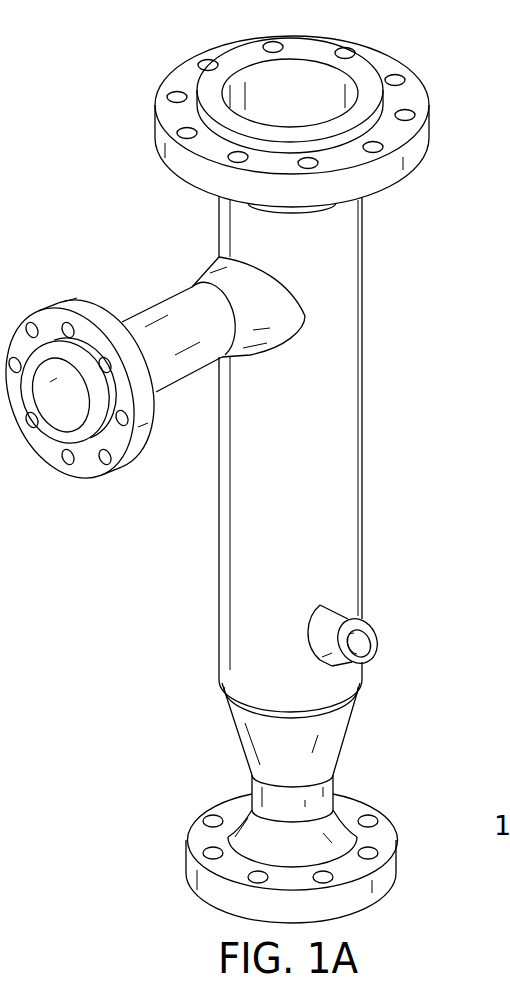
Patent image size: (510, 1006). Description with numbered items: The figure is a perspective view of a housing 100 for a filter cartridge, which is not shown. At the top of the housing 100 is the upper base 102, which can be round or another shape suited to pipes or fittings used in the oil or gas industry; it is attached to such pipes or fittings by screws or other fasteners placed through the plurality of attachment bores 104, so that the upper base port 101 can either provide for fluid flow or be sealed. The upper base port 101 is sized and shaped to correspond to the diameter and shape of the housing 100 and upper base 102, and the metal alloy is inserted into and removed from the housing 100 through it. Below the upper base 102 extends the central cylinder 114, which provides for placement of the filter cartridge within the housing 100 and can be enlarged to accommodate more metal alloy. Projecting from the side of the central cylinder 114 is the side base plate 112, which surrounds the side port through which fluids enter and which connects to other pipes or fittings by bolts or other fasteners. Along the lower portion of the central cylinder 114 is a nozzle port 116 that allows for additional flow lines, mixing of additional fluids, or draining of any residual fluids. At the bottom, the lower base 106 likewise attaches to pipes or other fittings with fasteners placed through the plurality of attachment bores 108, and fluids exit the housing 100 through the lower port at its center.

The housing 100 is at (420, 318).
The upper base port 101 is at (305, 82).
The upper base 102 is at (425, 134).
The attachment bores 104 is at (170, 90).
The lower base 106 is at (360, 808).
The attachment bores 108 is at (210, 808).
The side base plate 112 is at (92, 478).
The central cylinder 114 is at (218, 529).
The nozzle port 116 is at (370, 650).